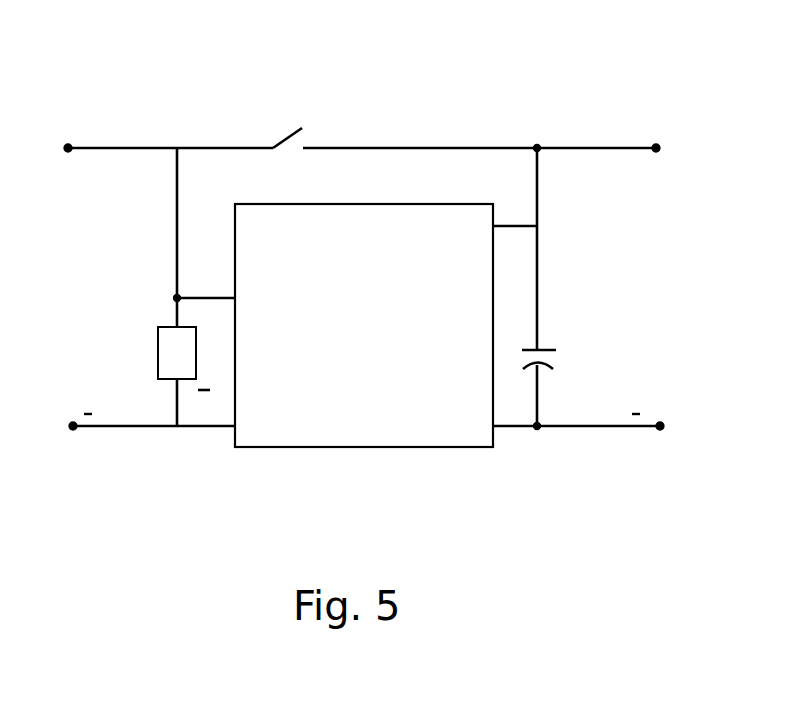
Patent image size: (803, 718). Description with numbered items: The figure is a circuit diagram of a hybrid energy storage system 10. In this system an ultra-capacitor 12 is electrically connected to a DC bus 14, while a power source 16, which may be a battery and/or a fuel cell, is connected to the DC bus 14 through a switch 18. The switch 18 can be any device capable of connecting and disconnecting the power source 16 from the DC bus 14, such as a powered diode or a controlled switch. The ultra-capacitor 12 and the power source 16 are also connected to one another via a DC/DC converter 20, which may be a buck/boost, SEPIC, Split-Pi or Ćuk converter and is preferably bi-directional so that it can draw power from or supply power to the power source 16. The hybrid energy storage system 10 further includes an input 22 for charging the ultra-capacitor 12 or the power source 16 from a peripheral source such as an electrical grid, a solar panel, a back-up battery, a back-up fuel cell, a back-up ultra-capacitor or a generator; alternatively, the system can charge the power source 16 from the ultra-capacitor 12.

The hybrid energy storage system 10 is at (534, 108).
The ultra-capacitor 12 is at (545, 350).
The DC bus 14 is at (658, 146).
The power source 16 is at (158, 348).
The switch 18 is at (291, 135).
The DC/DC converter 20 is at (291, 448).
The input 22 is at (68, 146).